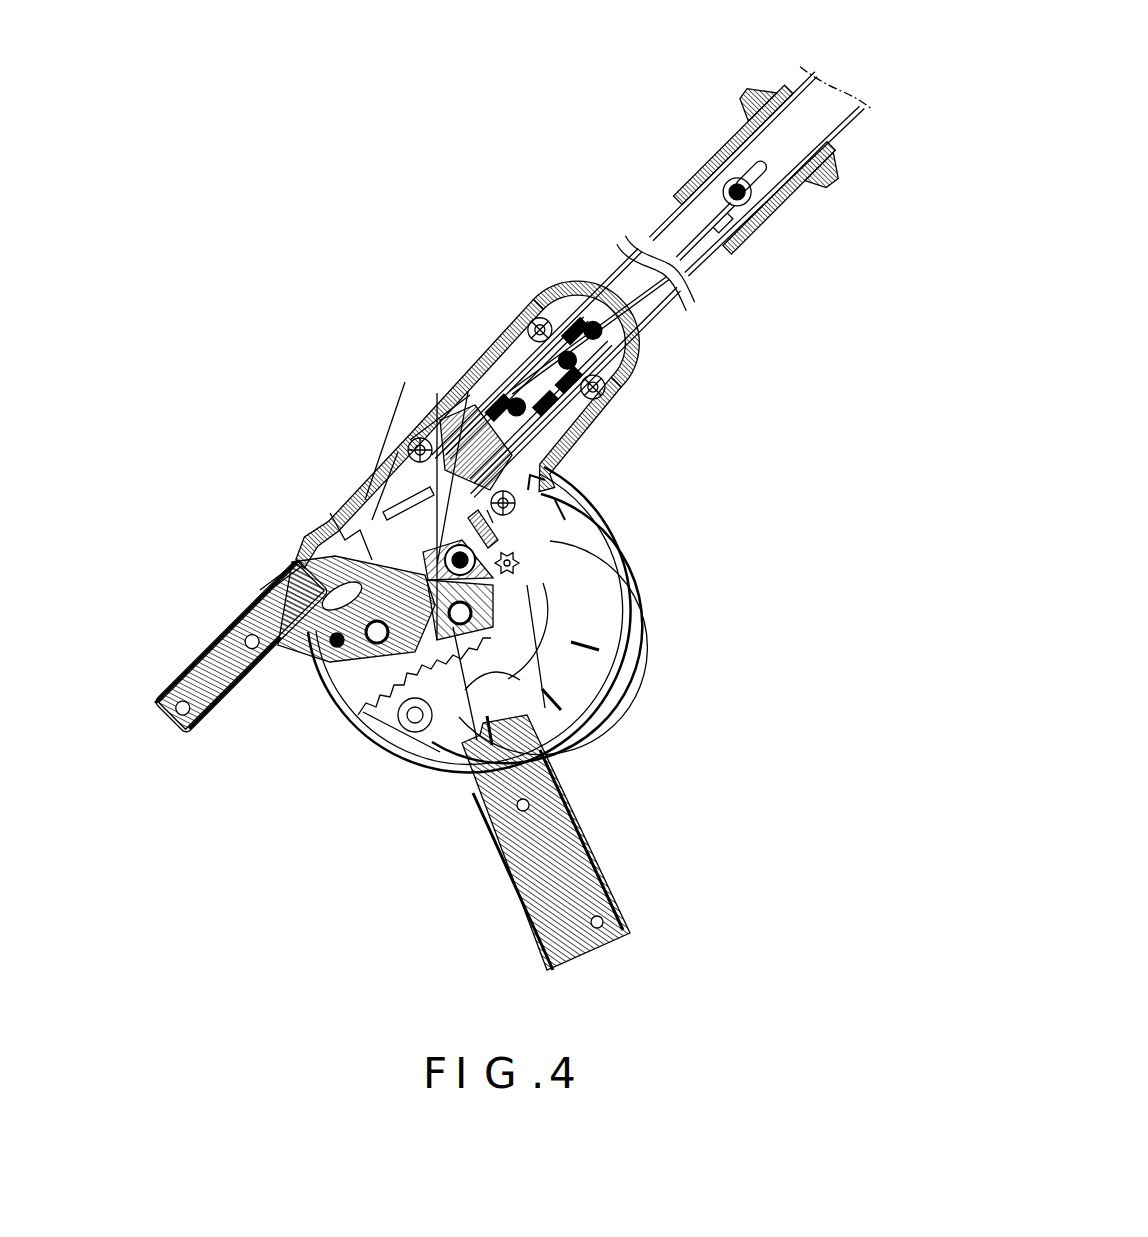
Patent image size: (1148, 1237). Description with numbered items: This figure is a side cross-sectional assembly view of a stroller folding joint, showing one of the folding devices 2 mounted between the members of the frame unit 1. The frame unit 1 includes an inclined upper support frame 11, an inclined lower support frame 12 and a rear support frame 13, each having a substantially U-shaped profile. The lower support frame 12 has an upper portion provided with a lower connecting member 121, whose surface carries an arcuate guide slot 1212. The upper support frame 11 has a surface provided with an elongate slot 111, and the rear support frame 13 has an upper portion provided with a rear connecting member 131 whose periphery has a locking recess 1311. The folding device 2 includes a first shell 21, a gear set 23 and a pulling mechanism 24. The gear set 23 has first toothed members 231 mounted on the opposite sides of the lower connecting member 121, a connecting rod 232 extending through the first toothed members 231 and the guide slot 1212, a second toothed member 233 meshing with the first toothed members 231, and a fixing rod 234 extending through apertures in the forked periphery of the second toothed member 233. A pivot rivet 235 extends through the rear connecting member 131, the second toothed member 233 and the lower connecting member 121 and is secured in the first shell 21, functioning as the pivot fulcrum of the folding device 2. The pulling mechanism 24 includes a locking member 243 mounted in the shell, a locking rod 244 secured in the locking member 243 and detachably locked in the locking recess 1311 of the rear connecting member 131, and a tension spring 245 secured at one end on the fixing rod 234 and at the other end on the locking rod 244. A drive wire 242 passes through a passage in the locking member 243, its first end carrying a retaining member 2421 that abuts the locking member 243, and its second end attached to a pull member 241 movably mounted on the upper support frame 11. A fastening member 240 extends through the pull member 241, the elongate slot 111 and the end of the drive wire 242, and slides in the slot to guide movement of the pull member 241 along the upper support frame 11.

The frame unit 1 is at (782, 320).
The upper support frame 11 is at (668, 293).
The elongate slot 111 is at (762, 175).
The lower support frame 12 is at (195, 735).
The lower connecting member 121 is at (240, 668).
The rear support frame 13 is at (605, 873).
The rear connecting member 131 is at (553, 830).
The arcuate guide slot 1212 is at (358, 668).
The locking recess 1311 is at (582, 510).
The folding device 2 is at (308, 213).
The first shell 21 is at (565, 435).
The gear set 23 is at (283, 366).
The first toothed member 231 is at (255, 590).
The connecting rod 232 is at (330, 513).
The second toothed member 233 is at (357, 493).
The fixing rod 234 is at (397, 450).
The pivot rivet 235 is at (498, 625).
The pulling mechanism 24 is at (660, 8).
The fastening member 240 is at (723, 183).
The pull member 241 is at (745, 130).
The drive wire 242 is at (668, 230).
The retaining member 2421 is at (452, 420).
The locking member 243 is at (488, 372).
The locking rod 244 is at (543, 325).
The tension spring 245 is at (418, 440).